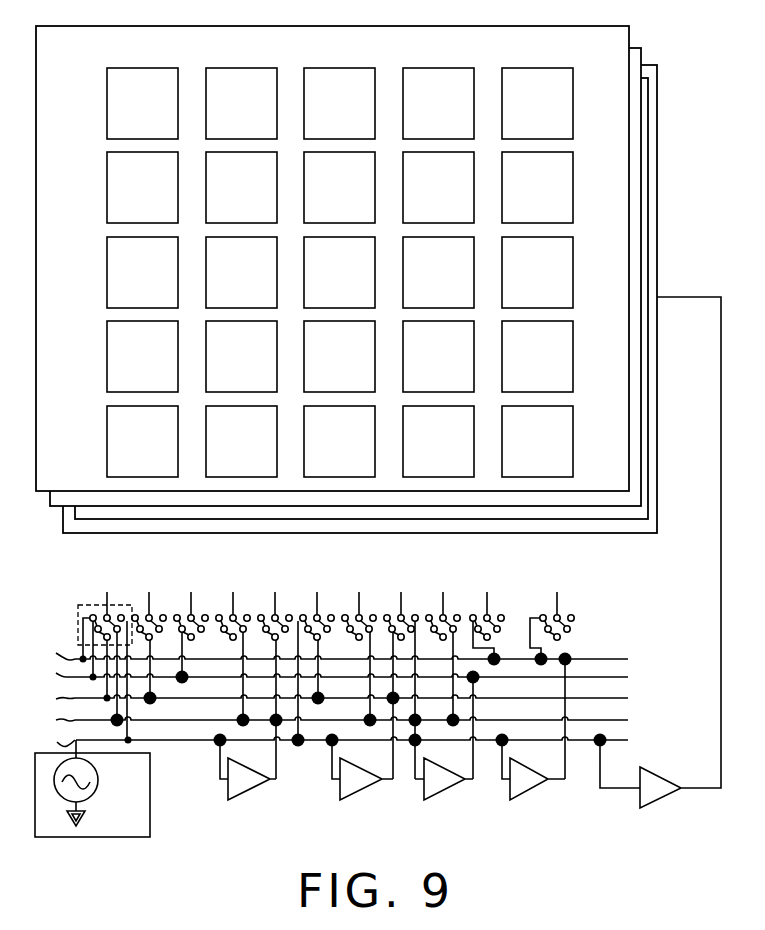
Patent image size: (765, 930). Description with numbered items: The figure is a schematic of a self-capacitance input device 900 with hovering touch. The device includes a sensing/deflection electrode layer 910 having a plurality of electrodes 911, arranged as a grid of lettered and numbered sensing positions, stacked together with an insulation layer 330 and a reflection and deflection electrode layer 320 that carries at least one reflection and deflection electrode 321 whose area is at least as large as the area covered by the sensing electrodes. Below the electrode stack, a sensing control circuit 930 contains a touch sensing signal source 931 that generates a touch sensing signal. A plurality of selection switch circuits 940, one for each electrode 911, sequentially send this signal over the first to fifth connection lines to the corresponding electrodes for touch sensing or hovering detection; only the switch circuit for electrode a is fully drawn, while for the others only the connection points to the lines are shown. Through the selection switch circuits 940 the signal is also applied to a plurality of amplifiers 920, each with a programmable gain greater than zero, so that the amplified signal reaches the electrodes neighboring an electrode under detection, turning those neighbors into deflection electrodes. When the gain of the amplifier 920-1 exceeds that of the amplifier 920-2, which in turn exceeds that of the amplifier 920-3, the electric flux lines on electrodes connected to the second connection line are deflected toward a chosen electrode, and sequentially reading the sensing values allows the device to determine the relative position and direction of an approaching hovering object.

The self-capacitance input device 900 is at (674, 582).
The sensing/deflection electrode layer 910 is at (632, 38).
The insulation layer 330 is at (644, 55).
The reflection and deflection electrode layer 320 is at (659, 141).
The reflection and deflection electrode 321 is at (650, 182).
The electrode 911 is at (358, 68).
The selection switch circuit 940 is at (78, 629).
The sensing control circuit 930 is at (150, 798).
The touch sensing signal source 931 is at (118, 785).
The amplifier 920-1 is at (254, 791).
The amplifier 920-2 is at (366, 791).
The amplifier 920-3 is at (449, 791).
The amplifier 920 is at (534, 791).